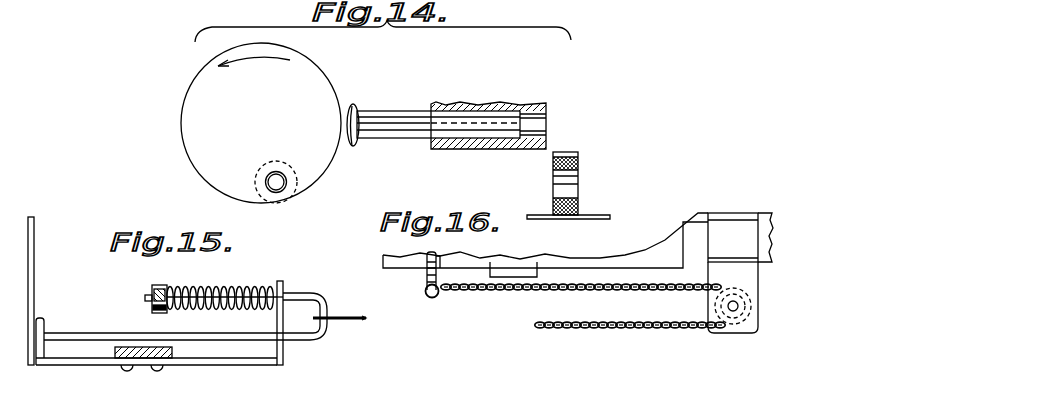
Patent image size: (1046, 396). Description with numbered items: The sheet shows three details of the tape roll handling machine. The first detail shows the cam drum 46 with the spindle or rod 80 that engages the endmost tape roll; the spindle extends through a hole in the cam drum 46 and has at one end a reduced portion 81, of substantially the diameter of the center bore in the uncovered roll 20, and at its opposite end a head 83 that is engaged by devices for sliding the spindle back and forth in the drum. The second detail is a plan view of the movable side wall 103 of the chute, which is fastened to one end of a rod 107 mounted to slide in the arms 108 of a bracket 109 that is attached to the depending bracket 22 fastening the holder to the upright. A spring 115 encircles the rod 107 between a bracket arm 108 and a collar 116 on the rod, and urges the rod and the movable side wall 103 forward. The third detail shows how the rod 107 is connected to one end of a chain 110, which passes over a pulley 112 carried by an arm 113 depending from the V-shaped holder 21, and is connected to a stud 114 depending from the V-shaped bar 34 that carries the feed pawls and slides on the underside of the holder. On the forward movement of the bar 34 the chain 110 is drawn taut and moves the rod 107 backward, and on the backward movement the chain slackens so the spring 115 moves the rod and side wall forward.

In FIG. 14, the cam drum 46 is at (183, 150).
In FIG. 14, the reduced portion 81 is at (267, 181).
In FIG. 14, the head 83 is at (353, 104).
In FIG. 14, the spindle or rod 80 is at (392, 117).
In FIG. 14, the uncovered roll 20 is at (578, 166).
In FIG. 15, the movable side wall 103 is at (34, 276).
In FIG. 15, the arm 108 is at (44, 321).
In FIG. 15, the bracket 109 is at (222, 366).
In FIG. 15, the rod 107 is at (190, 330).
In FIG. 15, the depending bracket or arm 22 is at (118, 347).
In FIG. 15, the collar 116 is at (158, 285).
In FIG. 15, the spring 115 is at (220, 288).
In FIG. 15, the chain 110 is at (358, 320).
In FIG. 16, the chain 110 is at (540, 327).
In FIG. 16, the V-shaped bar 34 is at (395, 268).
In FIG. 16, the stud 114 is at (427, 294).
In FIG. 16, the pulley 112 is at (733, 288).
In FIG. 16, the V-shaped trough or frame 21 is at (765, 213).
In FIG. 16, the arm 113 is at (720, 334).